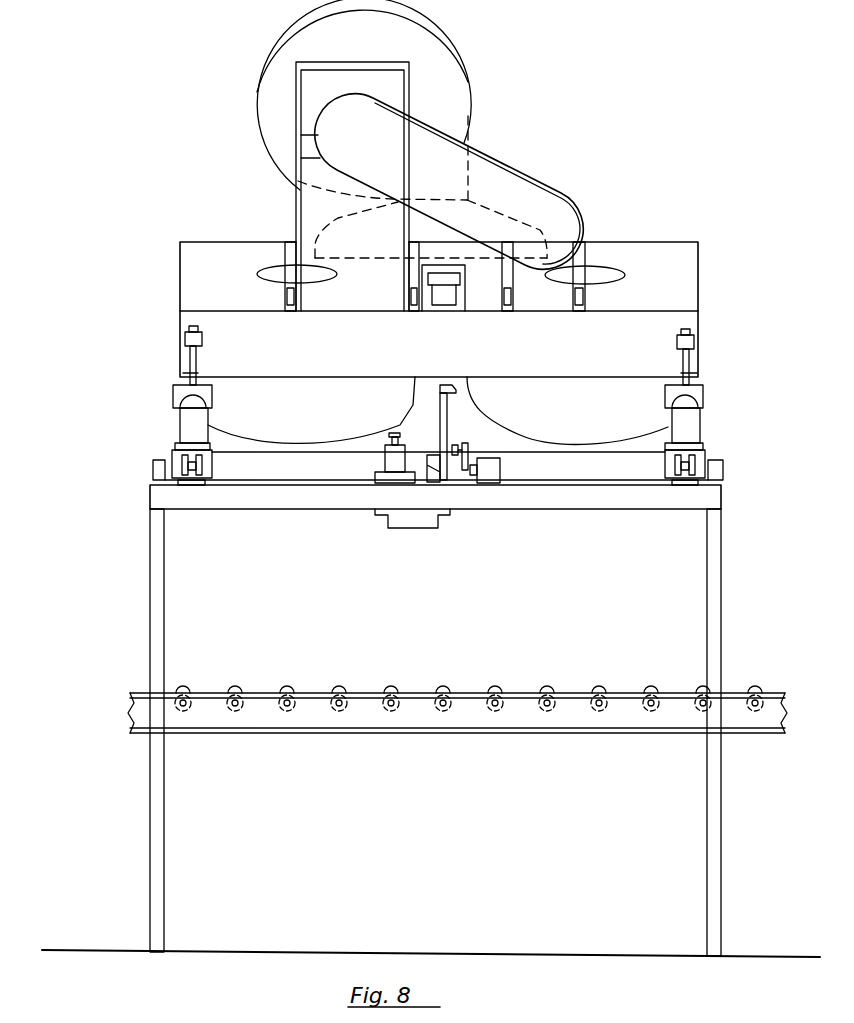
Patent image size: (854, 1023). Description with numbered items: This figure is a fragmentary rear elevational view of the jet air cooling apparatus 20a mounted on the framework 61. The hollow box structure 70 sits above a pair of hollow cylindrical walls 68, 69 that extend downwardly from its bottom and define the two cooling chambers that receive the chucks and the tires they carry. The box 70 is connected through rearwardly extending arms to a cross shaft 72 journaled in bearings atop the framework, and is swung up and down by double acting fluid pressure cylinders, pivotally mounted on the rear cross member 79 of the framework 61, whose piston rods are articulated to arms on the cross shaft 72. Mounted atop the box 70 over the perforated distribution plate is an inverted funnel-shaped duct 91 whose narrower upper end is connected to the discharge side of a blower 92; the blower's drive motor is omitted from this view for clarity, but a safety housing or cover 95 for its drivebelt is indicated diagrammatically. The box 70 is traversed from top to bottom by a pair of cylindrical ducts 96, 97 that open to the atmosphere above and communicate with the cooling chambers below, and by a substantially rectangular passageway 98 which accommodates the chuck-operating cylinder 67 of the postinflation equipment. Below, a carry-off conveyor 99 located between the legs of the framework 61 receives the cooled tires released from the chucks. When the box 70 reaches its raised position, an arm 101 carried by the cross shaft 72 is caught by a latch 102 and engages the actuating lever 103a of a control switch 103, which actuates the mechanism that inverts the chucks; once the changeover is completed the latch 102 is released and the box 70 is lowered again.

The jet air cooling apparatus 20a is at (614, 216).
The framework 61 is at (728, 540).
The chuck-operating cylinder 67 is at (433, 314).
The hollow cylindrical wall 68 is at (572, 444).
The hollow cylindrical wall 69 is at (283, 449).
The hollow box structure 70 is at (688, 289).
The cross shaft 72 is at (608, 481).
The rear cross member 79 is at (312, 494).
The inverted funnel-shaped duct 91 is at (471, 256).
The blower 92 is at (446, 61).
The safety housing or cover 95 is at (527, 182).
The cylindrical duct 96 is at (624, 273).
The cylindrical duct 97 is at (270, 279).
The rectangular passageway 98 is at (462, 315).
The carry-off conveyor 99 is at (328, 687).
The arm 101 is at (414, 405).
The latch 102 is at (436, 464).
The control switch 103 is at (483, 485).
The actuating lever 103a is at (461, 446).